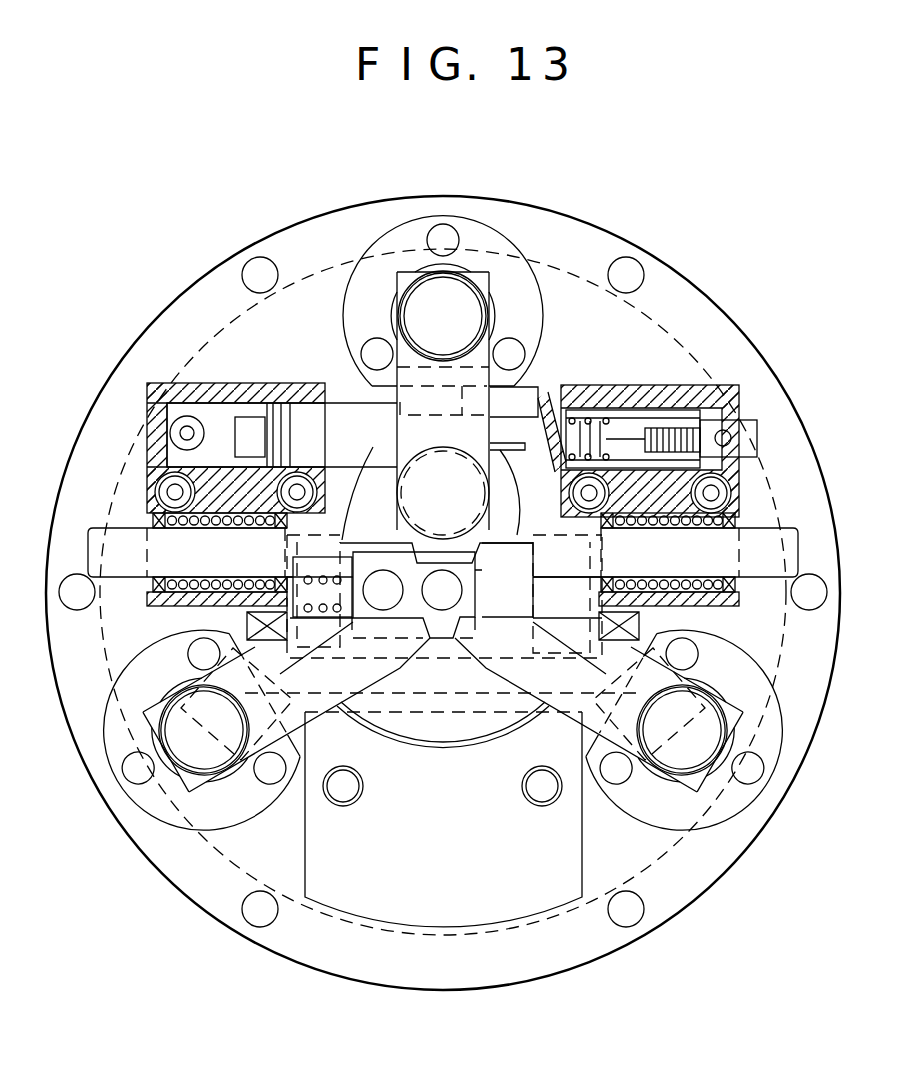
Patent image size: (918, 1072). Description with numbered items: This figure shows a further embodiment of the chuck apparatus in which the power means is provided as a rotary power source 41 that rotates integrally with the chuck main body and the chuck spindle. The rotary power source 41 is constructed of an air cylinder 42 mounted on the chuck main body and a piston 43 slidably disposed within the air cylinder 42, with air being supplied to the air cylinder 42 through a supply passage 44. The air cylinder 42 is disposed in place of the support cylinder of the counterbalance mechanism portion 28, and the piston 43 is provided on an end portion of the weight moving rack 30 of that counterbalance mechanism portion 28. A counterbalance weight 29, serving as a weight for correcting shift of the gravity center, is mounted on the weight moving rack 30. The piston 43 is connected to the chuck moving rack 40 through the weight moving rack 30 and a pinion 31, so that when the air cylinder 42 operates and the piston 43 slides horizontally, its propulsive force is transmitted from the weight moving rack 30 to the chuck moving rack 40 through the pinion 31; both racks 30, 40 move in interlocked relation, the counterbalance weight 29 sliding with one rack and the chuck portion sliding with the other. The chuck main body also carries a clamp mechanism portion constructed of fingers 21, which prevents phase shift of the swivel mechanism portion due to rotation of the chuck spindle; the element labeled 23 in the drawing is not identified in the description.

The fingers 21 is at (400, 264).
The spindle unit 23 is at (524, 290).
The counterbalance mechanism portion 28 is at (662, 380).
The counterbalance weight 29 is at (522, 395).
The weight moving rack 30 is at (535, 405).
The pinion 31 is at (488, 492).
The chuck moving rack 40 is at (418, 548).
The rotary power source 41 is at (236, 374).
The air cylinder 42 is at (200, 410).
The piston 43 is at (273, 410).
The supply passage 44 is at (170, 427).